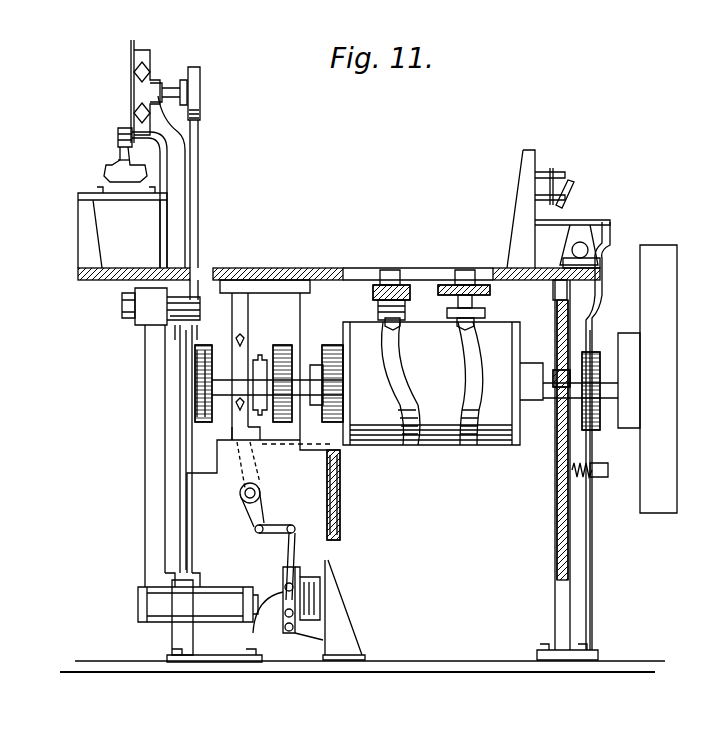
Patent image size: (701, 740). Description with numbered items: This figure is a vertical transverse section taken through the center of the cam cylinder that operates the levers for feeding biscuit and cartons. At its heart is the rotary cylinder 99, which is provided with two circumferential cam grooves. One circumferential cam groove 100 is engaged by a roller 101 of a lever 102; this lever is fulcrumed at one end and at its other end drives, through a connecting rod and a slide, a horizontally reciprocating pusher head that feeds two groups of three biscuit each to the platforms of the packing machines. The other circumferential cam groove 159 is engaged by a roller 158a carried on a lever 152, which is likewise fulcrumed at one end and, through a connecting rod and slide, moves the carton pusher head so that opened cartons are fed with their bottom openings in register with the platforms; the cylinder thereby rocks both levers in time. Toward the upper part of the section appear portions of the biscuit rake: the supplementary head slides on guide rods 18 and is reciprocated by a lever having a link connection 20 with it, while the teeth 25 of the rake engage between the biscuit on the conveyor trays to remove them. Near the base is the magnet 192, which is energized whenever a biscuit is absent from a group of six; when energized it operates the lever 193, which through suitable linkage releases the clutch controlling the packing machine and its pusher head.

The guide rods 18 is at (152, 100).
The teeth 25 is at (104, 172).
The link connection 20 is at (103, 206).
The lever 152 is at (373, 300).
The lever 102 is at (490, 292).
The roller 101 is at (474, 322).
The roller 158a is at (398, 326).
The circumferential cam groove 159 is at (403, 445).
The rotary cylinder 99 is at (440, 445).
The circumferential cam groove 100 is at (468, 445).
The lever 193 is at (286, 565).
The magnet 192 is at (322, 594).